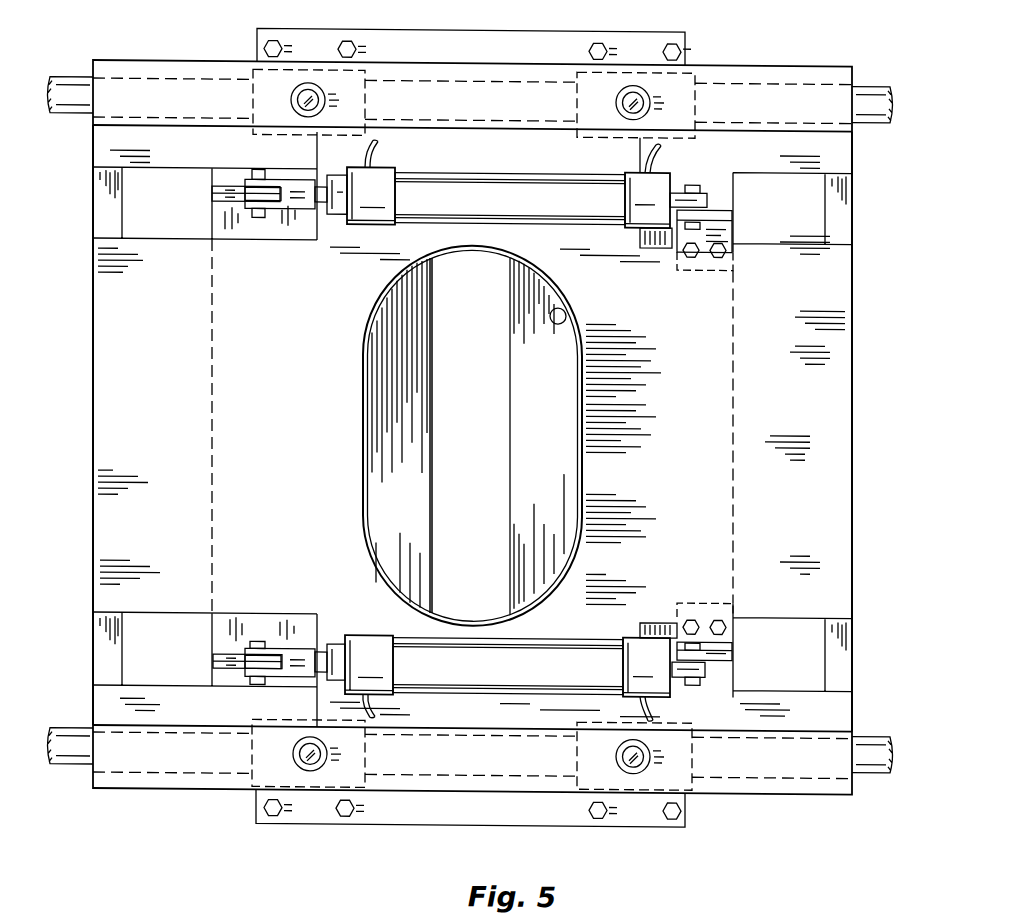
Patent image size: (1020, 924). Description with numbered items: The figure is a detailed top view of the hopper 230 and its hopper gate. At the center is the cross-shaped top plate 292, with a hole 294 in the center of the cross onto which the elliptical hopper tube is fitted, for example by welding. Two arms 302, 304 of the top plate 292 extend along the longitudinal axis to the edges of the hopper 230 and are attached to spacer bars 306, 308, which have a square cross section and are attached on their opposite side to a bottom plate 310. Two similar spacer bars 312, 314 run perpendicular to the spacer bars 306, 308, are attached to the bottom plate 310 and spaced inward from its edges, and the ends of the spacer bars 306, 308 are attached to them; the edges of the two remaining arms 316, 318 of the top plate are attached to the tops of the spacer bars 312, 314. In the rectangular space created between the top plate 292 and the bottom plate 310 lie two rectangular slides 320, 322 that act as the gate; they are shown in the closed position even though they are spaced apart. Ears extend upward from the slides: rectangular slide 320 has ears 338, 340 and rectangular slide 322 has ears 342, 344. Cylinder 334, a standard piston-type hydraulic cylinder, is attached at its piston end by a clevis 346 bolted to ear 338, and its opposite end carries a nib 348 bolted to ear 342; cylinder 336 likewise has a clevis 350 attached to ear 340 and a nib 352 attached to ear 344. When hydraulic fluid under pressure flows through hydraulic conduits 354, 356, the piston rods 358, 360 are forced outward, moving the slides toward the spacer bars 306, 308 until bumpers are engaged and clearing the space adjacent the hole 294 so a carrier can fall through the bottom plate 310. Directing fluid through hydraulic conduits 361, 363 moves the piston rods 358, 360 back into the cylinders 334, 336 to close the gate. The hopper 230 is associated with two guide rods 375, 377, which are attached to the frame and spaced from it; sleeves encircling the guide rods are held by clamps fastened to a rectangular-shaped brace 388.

The hopper 230 is at (725, 44).
The top plate 292 is at (763, 569).
The hole 294 is at (560, 302).
The arm 302 is at (122, 336).
The arm 304 is at (832, 498).
The spacer bar 306 is at (105, 202).
The spacer bar 308 is at (842, 215).
The bottom plate 310 is at (144, 78).
The spacer bar 312 is at (840, 718).
The spacer bar 314 is at (828, 140).
The arm 316 is at (557, 712).
The arm 318 is at (541, 153).
The rectangular slide 320 is at (227, 627).
The rectangular slide 322 is at (684, 372).
The cylinder 334 is at (520, 690).
The cylinder 336 is at (483, 183).
The ear 338 is at (233, 662).
The ear 340 is at (232, 188).
The ear 342 is at (720, 653).
The ear 344 is at (713, 207).
The clevis 346 is at (293, 660).
The nib 348 is at (688, 680).
The clevis 350 is at (295, 192).
The nib 352 is at (698, 194).
The hydraulic conduit 354 is at (640, 700).
The hydraulic conduit 356 is at (637, 143).
The piston rod 358 is at (330, 672).
The piston rod 360 is at (333, 200).
The hydraulic conduit 361 is at (375, 714).
The hydraulic conduit 363 is at (378, 140).
The guide rod 375 is at (872, 752).
The guide rod 377 is at (886, 100).
The brace 388 is at (312, 808).